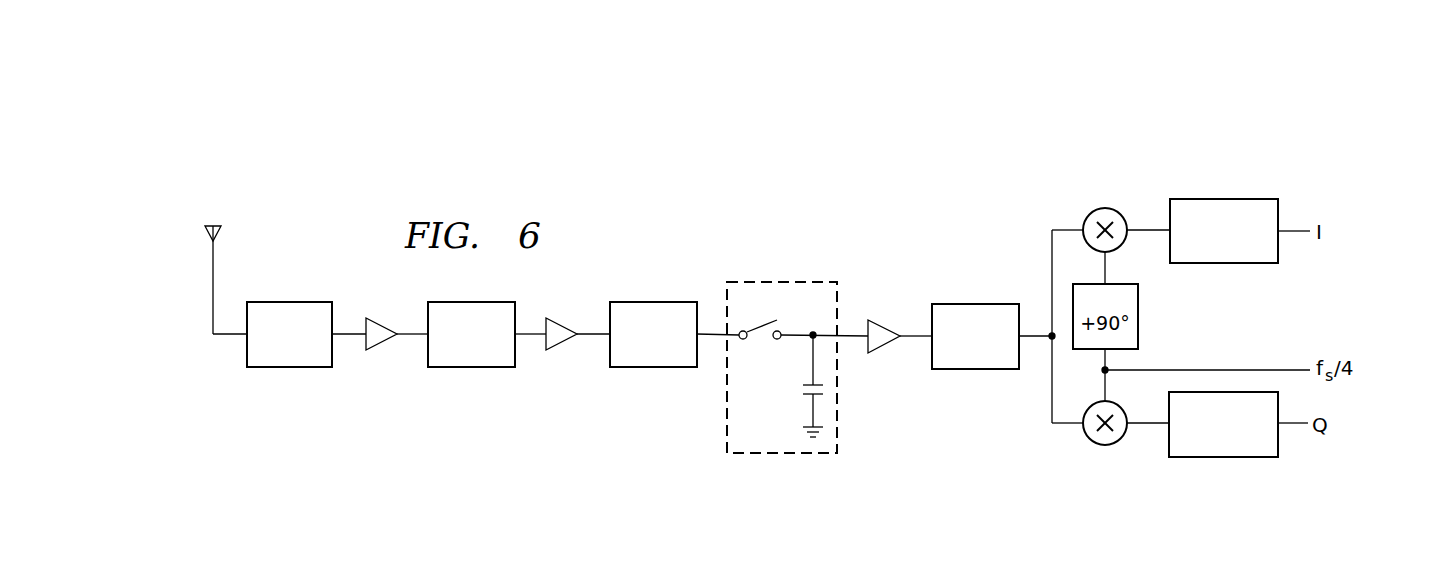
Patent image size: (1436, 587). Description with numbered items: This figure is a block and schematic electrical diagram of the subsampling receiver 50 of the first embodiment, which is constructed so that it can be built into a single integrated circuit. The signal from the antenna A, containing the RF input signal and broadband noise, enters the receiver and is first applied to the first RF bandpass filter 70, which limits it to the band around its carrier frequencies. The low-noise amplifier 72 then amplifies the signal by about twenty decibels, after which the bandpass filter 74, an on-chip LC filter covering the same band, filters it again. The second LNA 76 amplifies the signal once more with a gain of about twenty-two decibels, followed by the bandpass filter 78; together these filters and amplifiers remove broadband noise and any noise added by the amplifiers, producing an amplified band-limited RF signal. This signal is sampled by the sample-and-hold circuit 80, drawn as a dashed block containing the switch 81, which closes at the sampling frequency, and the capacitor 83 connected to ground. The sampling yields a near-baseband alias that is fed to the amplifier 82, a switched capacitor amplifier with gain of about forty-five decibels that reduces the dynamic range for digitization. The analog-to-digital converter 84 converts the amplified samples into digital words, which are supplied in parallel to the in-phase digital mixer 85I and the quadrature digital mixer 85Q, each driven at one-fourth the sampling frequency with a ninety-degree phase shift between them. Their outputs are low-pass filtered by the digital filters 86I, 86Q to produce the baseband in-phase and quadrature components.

The antenna A is at (211, 219).
The subsampling receiver 50 is at (539, 447).
The first RF bandpass filter 70 is at (289, 367).
The low-noise amplifier 72 is at (381, 342).
The bandpass filter 74 is at (472, 367).
The second LNA 76 is at (564, 342).
The bandpass filter 78 is at (655, 368).
The sample-and-hold circuit 80 is at (797, 395).
The switch 81 is at (759, 338).
The amplifier 82 is at (888, 345).
The capacitor 83 is at (804, 393).
The analog-to-digital converter 84 is at (975, 370).
The in-phase digital mixer 85I is at (1100, 207).
The quadrature digital mixer 85Q is at (1103, 446).
The digital filter 86I is at (1224, 199).
The digital filter 86Q is at (1222, 457).